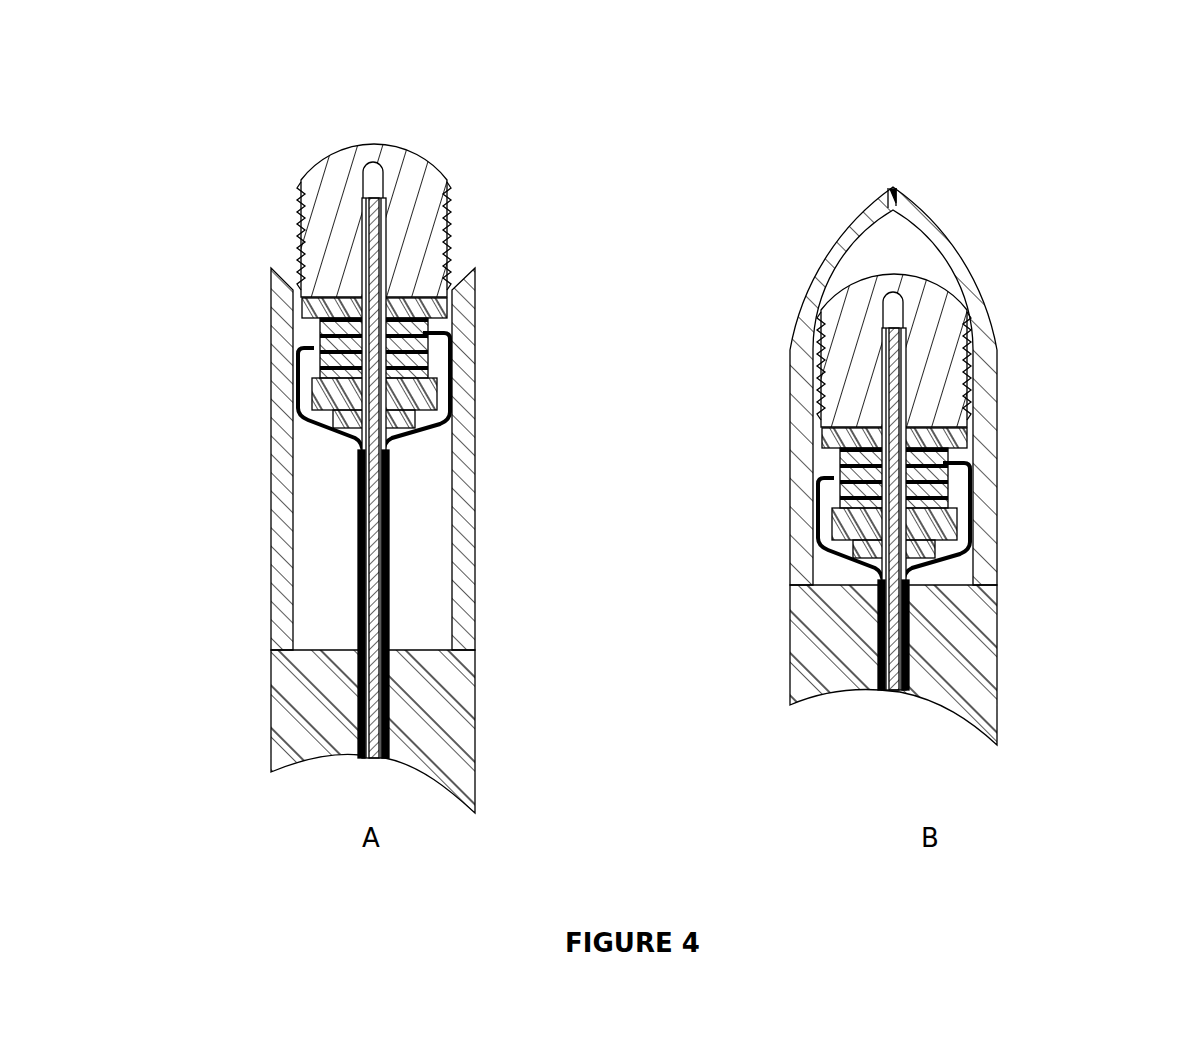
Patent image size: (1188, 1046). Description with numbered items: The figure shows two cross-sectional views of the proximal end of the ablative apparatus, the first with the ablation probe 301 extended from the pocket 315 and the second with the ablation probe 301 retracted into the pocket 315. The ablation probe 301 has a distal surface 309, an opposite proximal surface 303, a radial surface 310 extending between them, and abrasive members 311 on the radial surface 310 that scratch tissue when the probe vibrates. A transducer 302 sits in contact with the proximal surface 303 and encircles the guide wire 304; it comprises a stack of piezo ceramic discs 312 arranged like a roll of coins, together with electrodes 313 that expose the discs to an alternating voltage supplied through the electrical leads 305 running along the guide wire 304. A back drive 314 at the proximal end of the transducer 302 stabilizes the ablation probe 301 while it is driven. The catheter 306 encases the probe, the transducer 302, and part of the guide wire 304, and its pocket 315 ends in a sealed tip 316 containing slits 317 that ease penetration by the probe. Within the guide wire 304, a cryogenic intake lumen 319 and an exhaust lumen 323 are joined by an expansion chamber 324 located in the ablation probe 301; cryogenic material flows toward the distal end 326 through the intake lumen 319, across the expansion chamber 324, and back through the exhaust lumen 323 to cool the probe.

The ablation probe 301 is at (350, 245).
The transducer 302 is at (614, 422).
The proximal surface 303 is at (340, 292).
The guide wire 304 is at (357, 655).
The electrical leads 305 is at (318, 430).
The catheter 306 is at (318, 737).
The distal surface 309 is at (398, 142).
The radial surface 310 is at (447, 220).
The abrasive members 311 is at (453, 255).
The piezo ceramic discs 312 is at (322, 340).
The electrodes 313 is at (305, 308).
The back drive 314 is at (330, 397).
The pocket 315 is at (318, 588).
The sealed tip 316 is at (887, 203).
The slits 317 is at (900, 203).
The cryogenic intake lumen 319 is at (380, 705).
The exhaust lumen 323 is at (375, 685).
The expansion chamber 324 is at (372, 185).
The distal end 326 is at (585, 200).